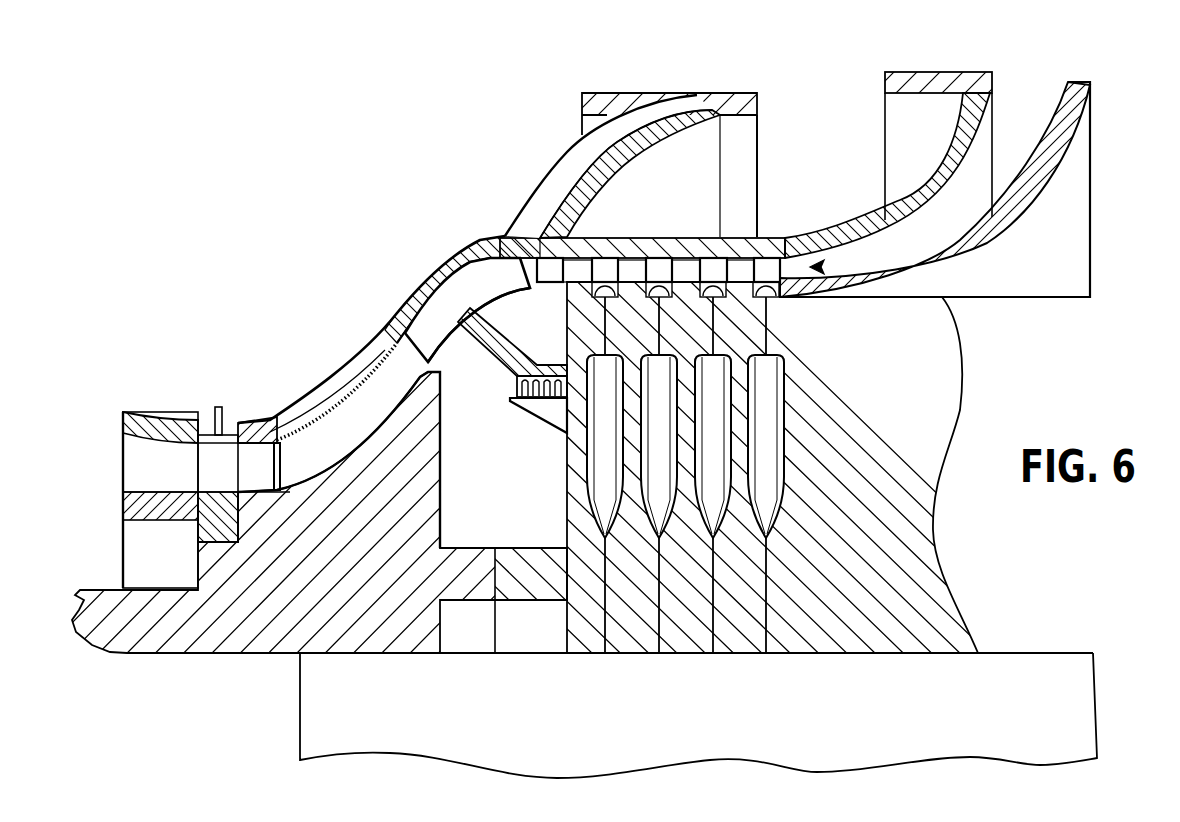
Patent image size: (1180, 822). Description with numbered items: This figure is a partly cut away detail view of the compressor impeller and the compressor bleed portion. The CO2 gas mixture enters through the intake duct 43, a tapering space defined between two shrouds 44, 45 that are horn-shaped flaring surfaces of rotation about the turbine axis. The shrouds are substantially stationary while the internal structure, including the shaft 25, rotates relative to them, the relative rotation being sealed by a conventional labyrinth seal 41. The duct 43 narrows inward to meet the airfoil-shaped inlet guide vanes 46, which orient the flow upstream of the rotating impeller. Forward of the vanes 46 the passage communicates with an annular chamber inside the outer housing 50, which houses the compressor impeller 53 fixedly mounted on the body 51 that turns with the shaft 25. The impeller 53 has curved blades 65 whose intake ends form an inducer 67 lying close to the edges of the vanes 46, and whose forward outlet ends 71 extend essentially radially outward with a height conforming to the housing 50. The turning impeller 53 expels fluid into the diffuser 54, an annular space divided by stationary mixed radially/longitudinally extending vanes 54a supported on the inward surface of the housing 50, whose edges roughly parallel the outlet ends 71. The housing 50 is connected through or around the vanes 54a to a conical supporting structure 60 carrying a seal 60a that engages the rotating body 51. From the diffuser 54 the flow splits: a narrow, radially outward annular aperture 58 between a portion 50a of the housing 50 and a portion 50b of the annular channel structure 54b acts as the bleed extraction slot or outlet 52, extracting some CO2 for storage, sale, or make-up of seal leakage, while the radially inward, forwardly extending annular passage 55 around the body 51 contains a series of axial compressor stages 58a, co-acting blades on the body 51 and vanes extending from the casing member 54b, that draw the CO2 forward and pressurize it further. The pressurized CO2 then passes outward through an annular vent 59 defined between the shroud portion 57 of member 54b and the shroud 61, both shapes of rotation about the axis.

The shaft 25 is at (1025, 650).
The labyrinth seal 41 is at (183, 493).
The intake duct 43 is at (118, 447).
The shroud 44 is at (153, 420).
The shroud 45 is at (133, 510).
The inlet guide vanes 46 is at (208, 457).
The outer housing 50 is at (421, 283).
The portion of housing 50a is at (583, 150).
The portion of annular channel structure 50b is at (735, 118).
The body 51 is at (270, 633).
The bleed extraction outlet 52 is at (697, 94).
The compressor impeller 53 is at (385, 410).
The diffuser 54 is at (467, 273).
The diffuser vanes 54a is at (436, 315).
The annular channel structure 54b is at (912, 72).
The inward annular passage 55 is at (822, 267).
The shroud portion 57 is at (980, 72).
The annular aperture 58 is at (645, 94).
The axial compressor stages 58a is at (710, 268).
The annular vent 59 is at (1028, 103).
The conical supporting structure 60 is at (512, 346).
The seal 60a is at (549, 398).
The shroud 61 is at (1060, 145).
The impeller blades 65 is at (347, 427).
The inducer 67 is at (292, 447).
The outlet end 71 is at (397, 370).